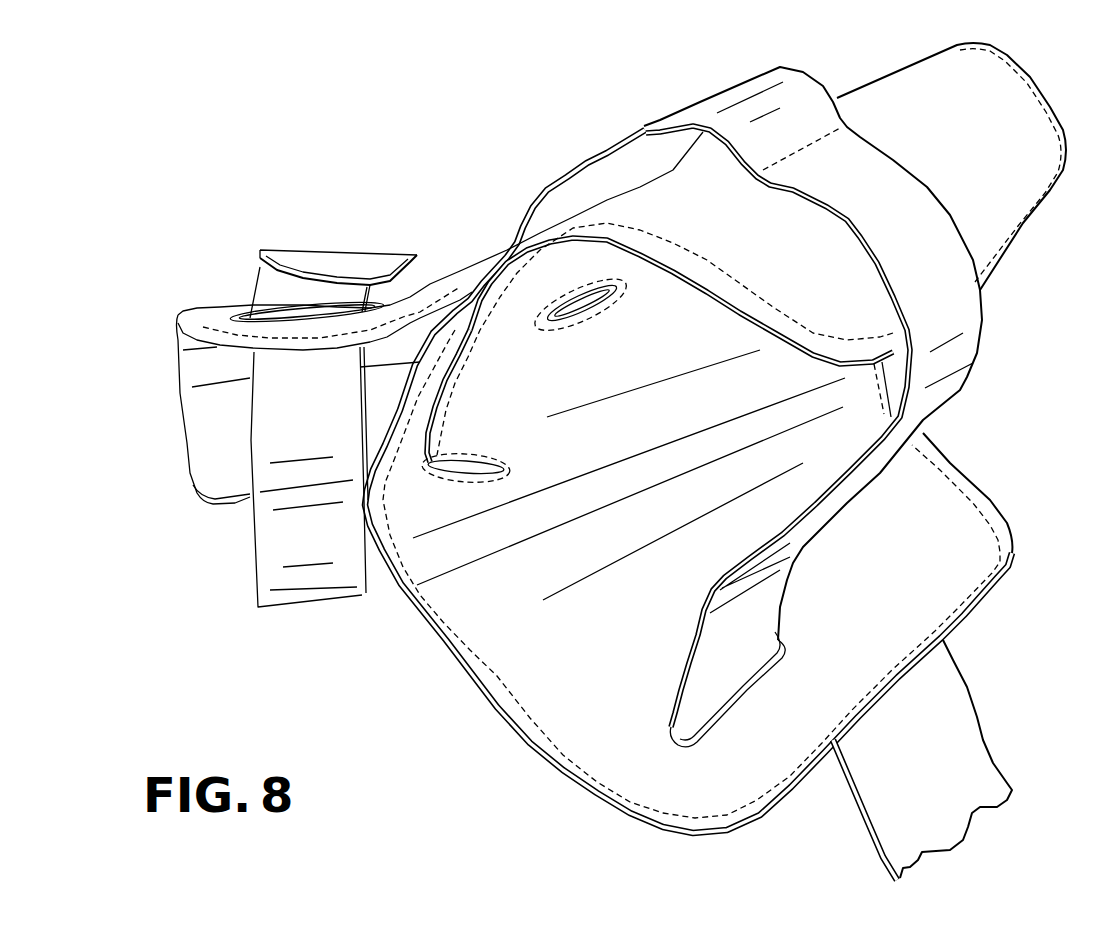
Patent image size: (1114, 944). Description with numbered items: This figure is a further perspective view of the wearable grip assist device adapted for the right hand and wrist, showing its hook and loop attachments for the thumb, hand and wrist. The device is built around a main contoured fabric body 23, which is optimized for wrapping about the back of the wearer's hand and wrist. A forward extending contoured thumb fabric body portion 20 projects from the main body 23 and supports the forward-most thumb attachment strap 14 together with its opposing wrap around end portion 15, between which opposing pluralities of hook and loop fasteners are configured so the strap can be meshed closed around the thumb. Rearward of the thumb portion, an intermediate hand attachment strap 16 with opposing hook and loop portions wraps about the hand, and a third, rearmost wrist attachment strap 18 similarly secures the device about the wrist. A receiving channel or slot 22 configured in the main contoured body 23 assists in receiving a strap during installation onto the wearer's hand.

The thumb attachment strap 14 is at (288, 593).
The wrap around end portion 15 is at (312, 258).
The hand attachment strap 16 is at (947, 321).
The wrist attachment strap 18 is at (973, 723).
The thumb fabric body portion 20 is at (207, 443).
The receiving channel or slot 22 is at (678, 748).
The main fabric body 23 is at (537, 700).